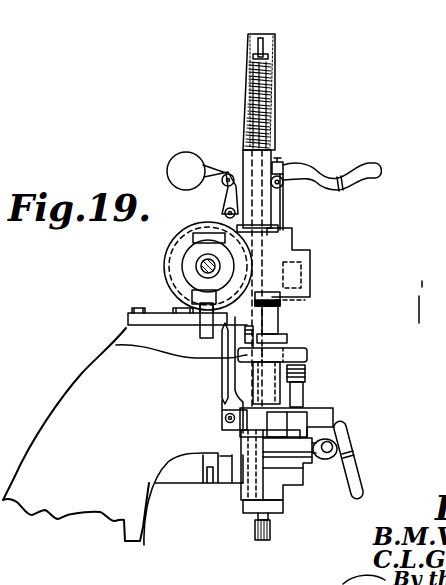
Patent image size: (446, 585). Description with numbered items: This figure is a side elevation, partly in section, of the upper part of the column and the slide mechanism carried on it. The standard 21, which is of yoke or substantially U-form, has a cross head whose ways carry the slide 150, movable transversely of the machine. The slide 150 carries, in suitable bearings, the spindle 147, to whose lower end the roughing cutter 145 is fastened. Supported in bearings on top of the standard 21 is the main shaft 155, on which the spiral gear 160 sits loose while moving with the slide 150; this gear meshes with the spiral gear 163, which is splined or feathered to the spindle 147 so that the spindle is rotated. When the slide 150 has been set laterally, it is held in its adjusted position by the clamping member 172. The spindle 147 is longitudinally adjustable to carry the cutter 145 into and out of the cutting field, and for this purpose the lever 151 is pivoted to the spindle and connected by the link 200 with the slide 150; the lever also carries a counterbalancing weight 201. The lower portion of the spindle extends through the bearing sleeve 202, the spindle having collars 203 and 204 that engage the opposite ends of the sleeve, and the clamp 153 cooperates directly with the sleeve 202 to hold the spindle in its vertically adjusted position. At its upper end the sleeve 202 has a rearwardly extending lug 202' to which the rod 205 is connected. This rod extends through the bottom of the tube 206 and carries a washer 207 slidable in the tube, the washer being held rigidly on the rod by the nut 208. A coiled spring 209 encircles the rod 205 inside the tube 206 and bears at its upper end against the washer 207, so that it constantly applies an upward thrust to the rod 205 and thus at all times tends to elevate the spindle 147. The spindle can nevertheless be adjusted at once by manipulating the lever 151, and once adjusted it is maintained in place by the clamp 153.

The standard 21 is at (125, 424).
The roughing cutter 145 is at (249, 530).
The spindle 147 is at (275, 325).
The slide 150 is at (238, 368).
The lever 151 is at (316, 166).
The clamp 153 is at (350, 455).
The main shaft 155 is at (197, 272).
The spiral gear 160 is at (170, 240).
The spiral gear 163 is at (310, 268).
The clamping member 172 is at (342, 417).
The link 200 is at (222, 202).
The counterbalancing weight 201 is at (183, 162).
The sleeve 202 is at (350, 386).
The rearwardly extending lug 202' is at (152, 343).
The collar 203 is at (283, 507).
The collar 204 is at (277, 343).
The rod 205 is at (273, 317).
The tube 206 is at (276, 52).
The washer 207 is at (258, 56).
The nut 208 is at (266, 40).
The coiled spring 209 is at (274, 88).